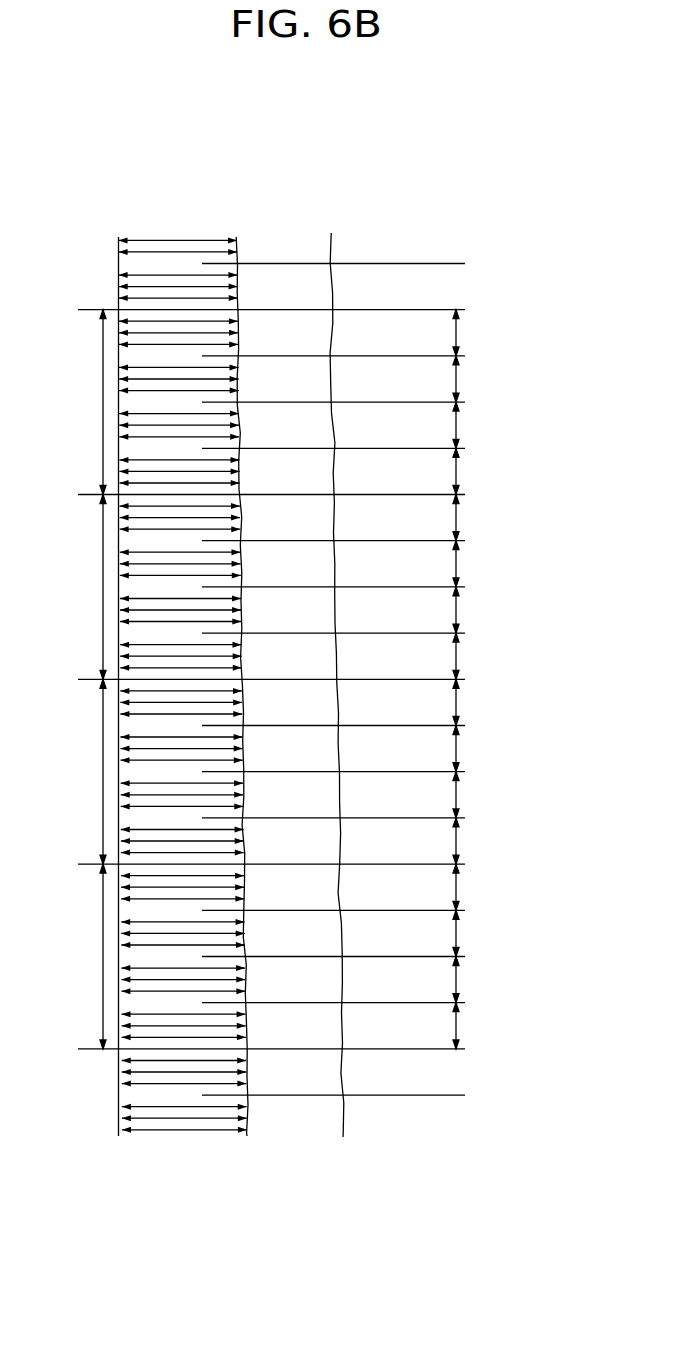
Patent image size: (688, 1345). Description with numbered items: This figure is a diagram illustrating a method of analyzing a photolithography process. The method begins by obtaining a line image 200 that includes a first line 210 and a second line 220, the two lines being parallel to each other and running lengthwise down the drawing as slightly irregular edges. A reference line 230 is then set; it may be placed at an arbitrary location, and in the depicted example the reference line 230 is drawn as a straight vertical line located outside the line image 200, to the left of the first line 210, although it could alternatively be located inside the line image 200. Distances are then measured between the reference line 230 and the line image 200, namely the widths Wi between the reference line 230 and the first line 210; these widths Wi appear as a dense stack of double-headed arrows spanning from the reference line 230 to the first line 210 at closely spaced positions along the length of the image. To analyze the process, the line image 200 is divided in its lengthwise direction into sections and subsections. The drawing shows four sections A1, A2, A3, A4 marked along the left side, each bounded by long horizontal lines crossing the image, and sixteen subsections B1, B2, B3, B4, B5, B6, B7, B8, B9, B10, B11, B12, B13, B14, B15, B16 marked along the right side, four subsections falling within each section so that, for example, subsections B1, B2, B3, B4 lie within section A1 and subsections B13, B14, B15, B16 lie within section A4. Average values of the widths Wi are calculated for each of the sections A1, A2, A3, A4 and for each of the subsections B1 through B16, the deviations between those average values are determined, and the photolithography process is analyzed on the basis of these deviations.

The line image 200 is at (297, 175).
The first line 210 is at (247, 1142).
The second line 220 is at (342, 1142).
The reference line 230 is at (122, 1142).
The width Wi is at (178, 238).
The section A1 is at (88, 402).
The section A2 is at (88, 587).
The section A3 is at (88, 771).
The section A4 is at (88, 956).
The subsection B1 is at (472, 333).
The subsection B2 is at (472, 379).
The subsection B3 is at (472, 425).
The subsection B4 is at (472, 471).
The subsection B5 is at (472, 518).
The subsection B6 is at (472, 564).
The subsection B7 is at (472, 610).
The subsection B8 is at (472, 656).
The subsection B9 is at (472, 702).
The subsection B10 is at (479, 749).
The subsection B11 is at (479, 795).
The subsection B12 is at (479, 841).
The subsection B13 is at (479, 887).
The subsection B14 is at (479, 933).
The subsection B15 is at (479, 980).
The subsection B16 is at (479, 1026).